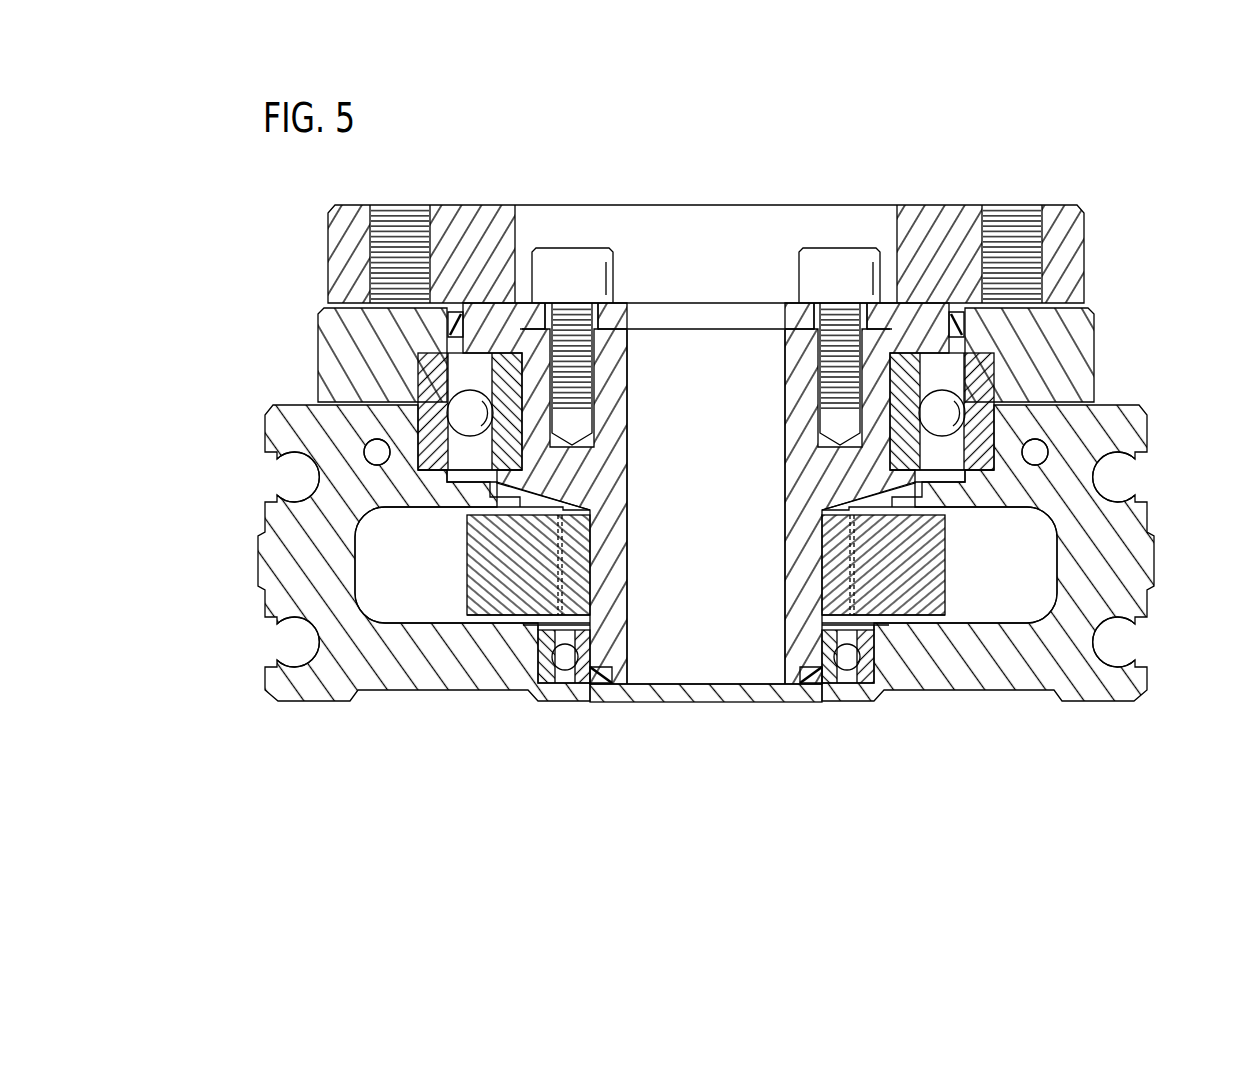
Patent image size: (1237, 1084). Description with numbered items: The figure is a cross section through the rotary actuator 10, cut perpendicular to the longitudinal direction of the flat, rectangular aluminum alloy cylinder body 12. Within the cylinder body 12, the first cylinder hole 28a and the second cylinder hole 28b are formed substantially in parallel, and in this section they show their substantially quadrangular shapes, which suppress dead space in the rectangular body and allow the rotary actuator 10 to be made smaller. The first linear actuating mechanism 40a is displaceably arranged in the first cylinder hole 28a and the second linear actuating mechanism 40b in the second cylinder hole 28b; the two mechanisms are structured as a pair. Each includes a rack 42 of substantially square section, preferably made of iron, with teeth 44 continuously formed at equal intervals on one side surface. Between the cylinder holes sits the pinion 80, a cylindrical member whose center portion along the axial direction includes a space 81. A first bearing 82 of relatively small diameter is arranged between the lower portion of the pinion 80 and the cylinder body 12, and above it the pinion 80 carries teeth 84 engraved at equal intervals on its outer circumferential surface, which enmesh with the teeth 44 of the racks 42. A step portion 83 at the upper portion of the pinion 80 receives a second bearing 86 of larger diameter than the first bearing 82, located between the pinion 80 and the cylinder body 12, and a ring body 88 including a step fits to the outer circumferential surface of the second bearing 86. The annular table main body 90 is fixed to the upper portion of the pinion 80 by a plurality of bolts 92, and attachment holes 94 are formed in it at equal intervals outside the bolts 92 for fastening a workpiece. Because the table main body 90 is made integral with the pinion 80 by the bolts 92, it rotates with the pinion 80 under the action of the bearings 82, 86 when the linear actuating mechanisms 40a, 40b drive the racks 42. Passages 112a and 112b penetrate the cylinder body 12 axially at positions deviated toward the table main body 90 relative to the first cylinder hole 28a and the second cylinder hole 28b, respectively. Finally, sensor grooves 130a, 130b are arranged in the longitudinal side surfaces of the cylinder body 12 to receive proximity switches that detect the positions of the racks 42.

The rotary actuator 10 is at (632, 134).
The cylinder body 12 is at (412, 702).
The first cylinder hole 28a is at (939, 565).
The second cylinder hole 28b is at (472, 565).
The first linear actuating mechanism 40a is at (954, 531).
The second linear actuating mechanism 40b is at (458, 531).
The rack 42 is at (505, 606).
The teeth 44 is at (585, 565).
The pinion 80 is at (633, 610).
The space 81 is at (706, 506).
The first bearing 82 is at (583, 677).
The step portion 83 is at (520, 463).
The teeth 84 is at (587, 518).
The second bearing 86 is at (428, 379).
The ring body 88 is at (327, 337).
The table main body 90 is at (332, 227).
The bolts 92 is at (574, 262).
The attachment holes 94 is at (428, 222).
The passage 112a is at (1036, 452).
The passage 112b is at (378, 450).
The sensor groove 130a is at (283, 478).
The sensor groove 130b is at (283, 643).